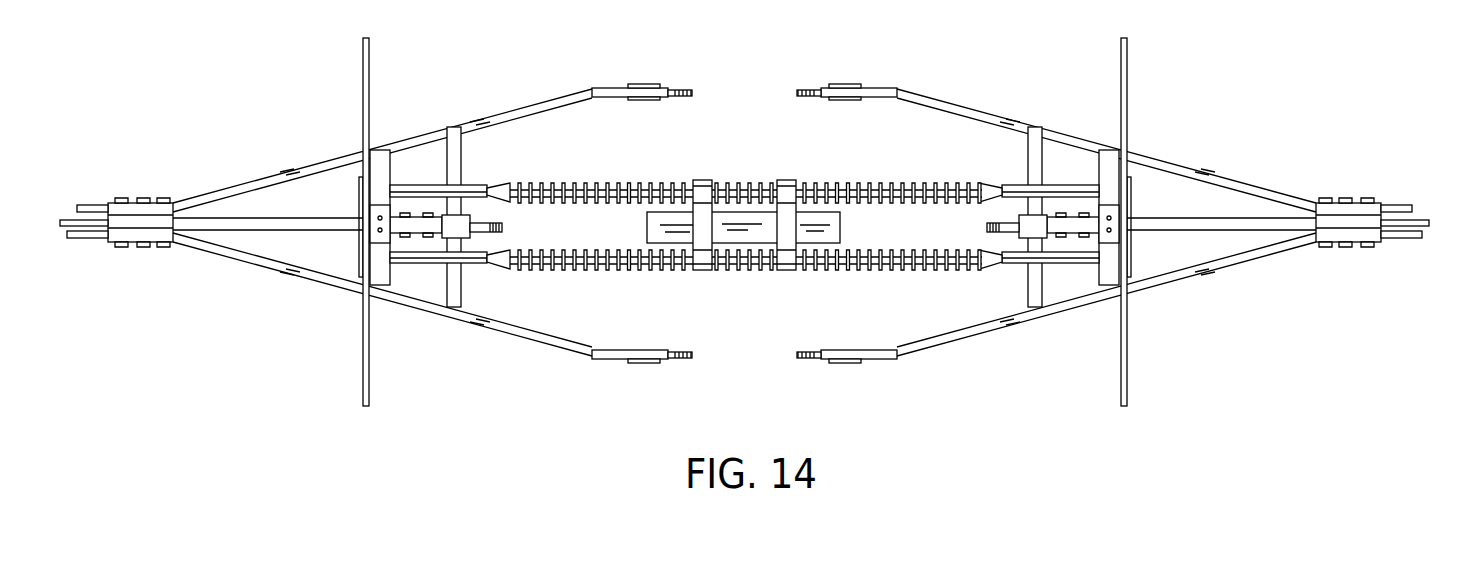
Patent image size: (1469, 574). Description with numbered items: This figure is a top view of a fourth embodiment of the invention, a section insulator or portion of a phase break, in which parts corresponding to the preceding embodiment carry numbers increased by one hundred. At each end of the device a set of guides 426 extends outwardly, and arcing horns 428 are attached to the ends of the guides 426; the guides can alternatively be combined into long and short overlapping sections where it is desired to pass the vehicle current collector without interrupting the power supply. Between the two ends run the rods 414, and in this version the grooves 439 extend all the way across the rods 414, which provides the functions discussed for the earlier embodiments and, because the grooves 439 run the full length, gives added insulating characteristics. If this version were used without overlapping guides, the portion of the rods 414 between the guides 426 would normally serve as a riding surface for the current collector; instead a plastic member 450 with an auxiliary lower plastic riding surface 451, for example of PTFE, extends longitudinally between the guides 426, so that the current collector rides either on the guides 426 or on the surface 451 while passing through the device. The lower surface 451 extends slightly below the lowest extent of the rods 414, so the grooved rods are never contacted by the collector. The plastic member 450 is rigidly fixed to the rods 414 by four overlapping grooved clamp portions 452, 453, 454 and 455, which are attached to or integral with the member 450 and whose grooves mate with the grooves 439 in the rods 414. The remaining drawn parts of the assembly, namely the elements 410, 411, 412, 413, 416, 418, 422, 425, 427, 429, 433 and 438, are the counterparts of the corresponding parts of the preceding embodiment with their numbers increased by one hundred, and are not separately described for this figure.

The left end rods 410 is at (62, 222).
The right end rods 411 is at (1222, 226).
The upper spring assembly 412 is at (690, 163).
The lower spring assembly 413 is at (767, 274).
The rods 414 is at (596, 204).
The guide rod 416 is at (412, 190).
The end plate 418 is at (376, 178).
The intermediate plate 422 is at (453, 294).
The central rod 425 is at (417, 222).
The guides 426 is at (253, 188).
The end hub 427 is at (143, 228).
The arcing horns 428 is at (678, 91).
The bearing block 429 is at (372, 220).
The transverse bar 433 is at (364, 56).
The adjusting block 438 is at (463, 218).
The grooves 439 is at (597, 186).
The plastic member 450 is at (677, 238).
The auxiliary lower plastic riding surface 451 is at (647, 229).
The grooved clamp portion 452 is at (705, 182).
The grooved clamp portion 453 is at (787, 182).
The grooved clamp portion 454 is at (698, 266).
The grooved clamp portion 455 is at (785, 268).